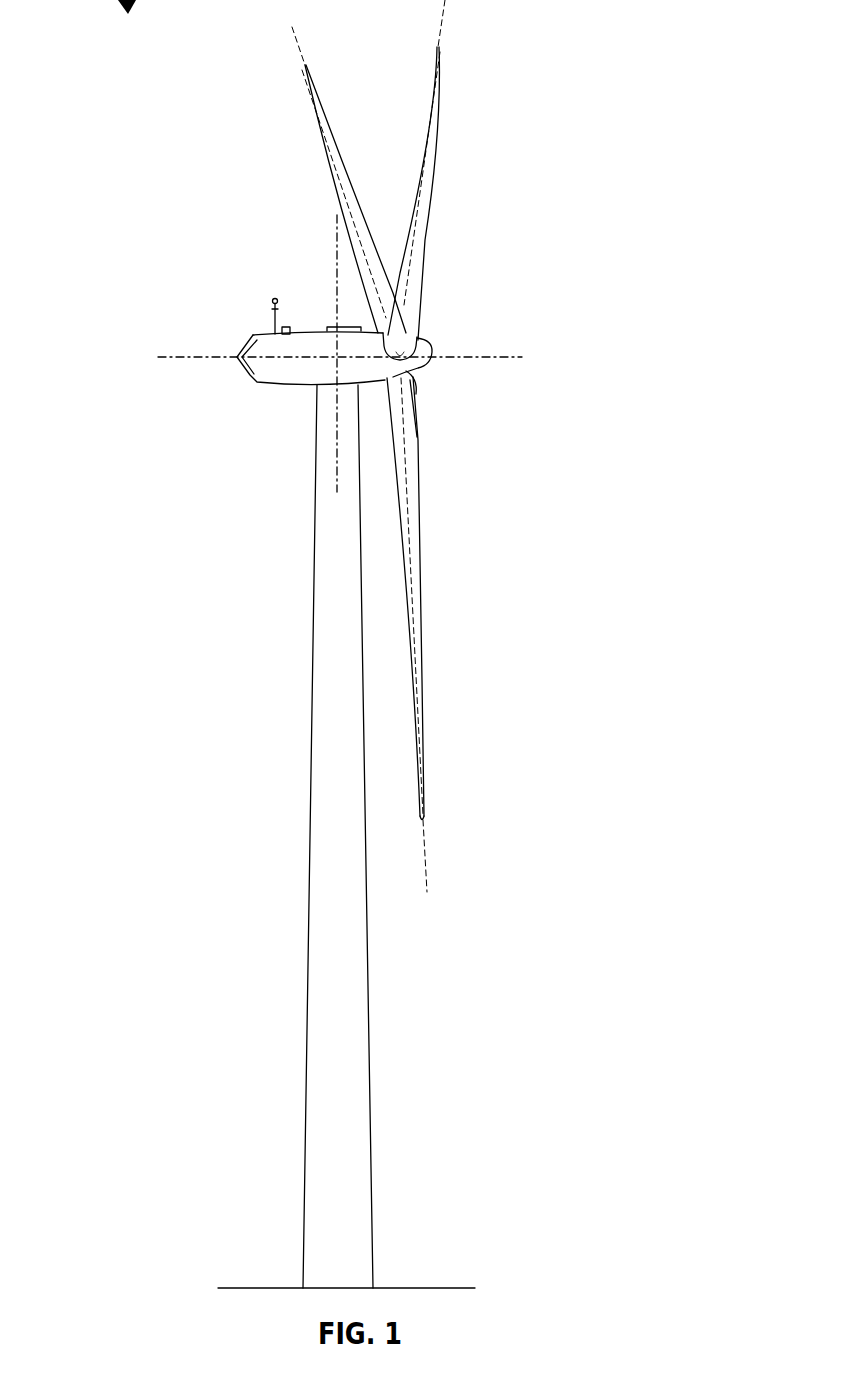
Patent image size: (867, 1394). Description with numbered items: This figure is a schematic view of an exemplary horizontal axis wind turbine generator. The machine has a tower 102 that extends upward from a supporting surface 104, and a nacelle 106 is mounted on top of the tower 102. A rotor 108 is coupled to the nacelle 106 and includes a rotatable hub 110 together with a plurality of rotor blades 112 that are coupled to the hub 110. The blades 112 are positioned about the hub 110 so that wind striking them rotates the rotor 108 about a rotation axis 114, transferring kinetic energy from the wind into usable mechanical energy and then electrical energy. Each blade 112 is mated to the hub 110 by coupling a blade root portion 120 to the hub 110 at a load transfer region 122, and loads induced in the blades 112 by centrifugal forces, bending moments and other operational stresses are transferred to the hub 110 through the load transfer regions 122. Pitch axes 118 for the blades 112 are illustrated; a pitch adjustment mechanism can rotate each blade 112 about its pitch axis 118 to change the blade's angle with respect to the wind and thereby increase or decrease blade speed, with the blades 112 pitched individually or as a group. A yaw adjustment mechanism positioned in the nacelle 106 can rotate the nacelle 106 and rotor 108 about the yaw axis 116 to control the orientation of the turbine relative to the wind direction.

The tower 102 is at (305, 1040).
The supporting surface 104 is at (273, 1287).
The nacelle 106 is at (276, 385).
The rotor 108 is at (458, 205).
The rotatable hub 110 is at (433, 351).
The rotor blades 112 is at (328, 150).
The rotation axis 114 is at (487, 358).
The yaw axis 116 is at (335, 263).
The pitch axis 118 is at (293, 40).
The blade root portion 120 is at (417, 437).
The load transfer region 122 is at (419, 388).